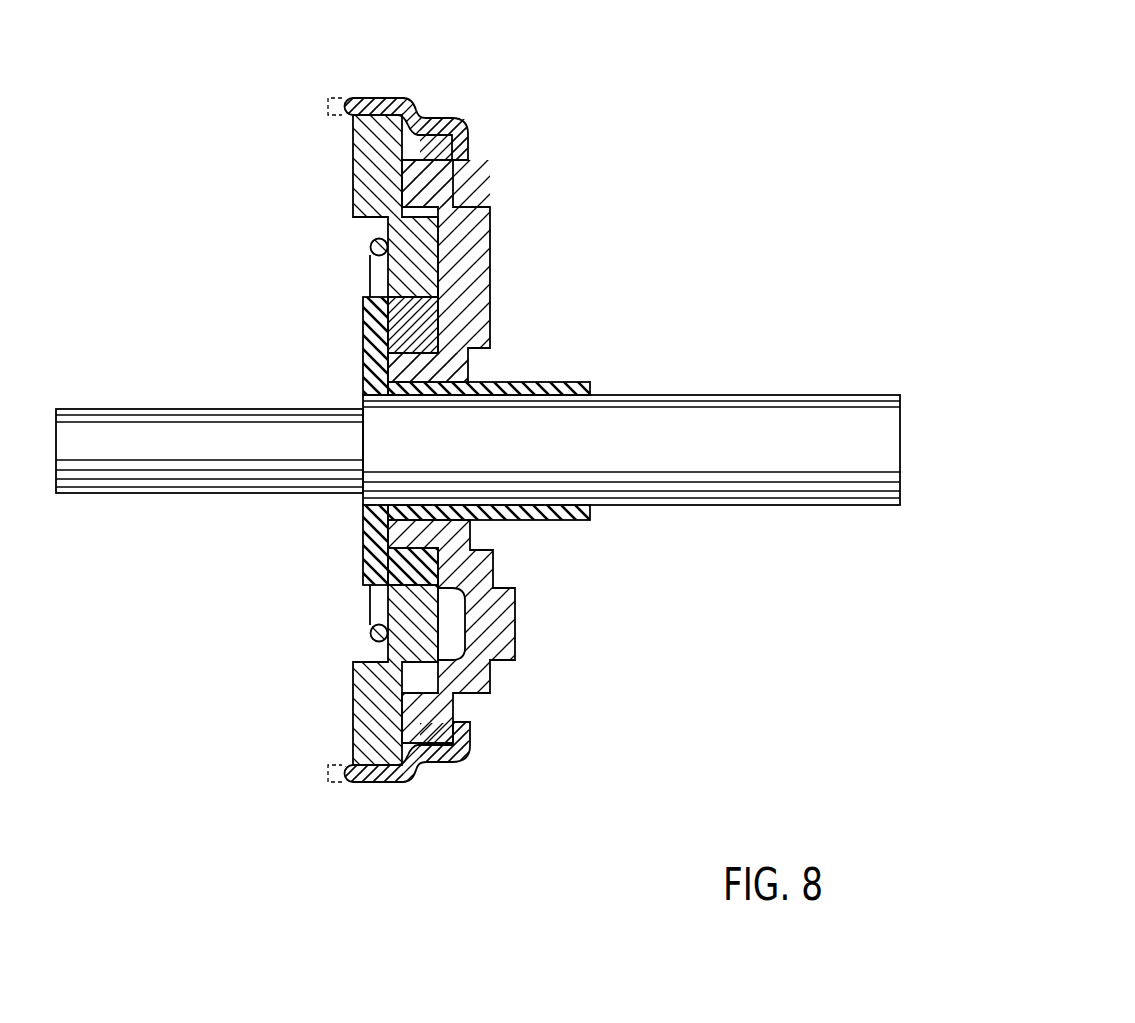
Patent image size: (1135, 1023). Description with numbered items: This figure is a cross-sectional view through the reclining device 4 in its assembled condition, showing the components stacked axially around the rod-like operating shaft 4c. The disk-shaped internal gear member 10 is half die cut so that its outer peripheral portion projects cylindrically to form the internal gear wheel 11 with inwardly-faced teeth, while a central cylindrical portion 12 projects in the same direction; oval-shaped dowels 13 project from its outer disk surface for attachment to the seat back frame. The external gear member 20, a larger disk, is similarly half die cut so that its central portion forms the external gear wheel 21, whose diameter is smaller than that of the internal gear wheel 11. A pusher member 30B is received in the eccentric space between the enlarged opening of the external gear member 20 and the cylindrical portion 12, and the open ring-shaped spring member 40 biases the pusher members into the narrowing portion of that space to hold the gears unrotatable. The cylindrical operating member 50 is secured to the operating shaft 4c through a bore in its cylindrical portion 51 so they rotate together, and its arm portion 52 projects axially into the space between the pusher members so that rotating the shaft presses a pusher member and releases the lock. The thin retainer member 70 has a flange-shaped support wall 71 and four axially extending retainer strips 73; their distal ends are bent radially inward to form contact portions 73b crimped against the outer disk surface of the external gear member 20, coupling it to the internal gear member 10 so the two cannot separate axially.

The reclining device 4 is at (685, 80).
The operating shaft 4c is at (181, 439).
The internal gear member 10 is at (455, 293).
The internal gear wheel 11 is at (430, 171).
The cylindrical portion 12 is at (417, 368).
The dowel 13 is at (507, 622).
The external gear member 20 is at (364, 195).
The external gear wheel 21 is at (406, 237).
The pusher member 30B is at (405, 322).
The spring member 40 is at (374, 617).
The operating member 50 is at (369, 370).
The cylindrical portion 51 is at (562, 389).
The arm portion 52 is at (417, 563).
The retainer member 70 is at (455, 114).
The support wall 71 is at (463, 142).
The retainer strip 73 is at (380, 103).
The contact portion 73b is at (346, 128).